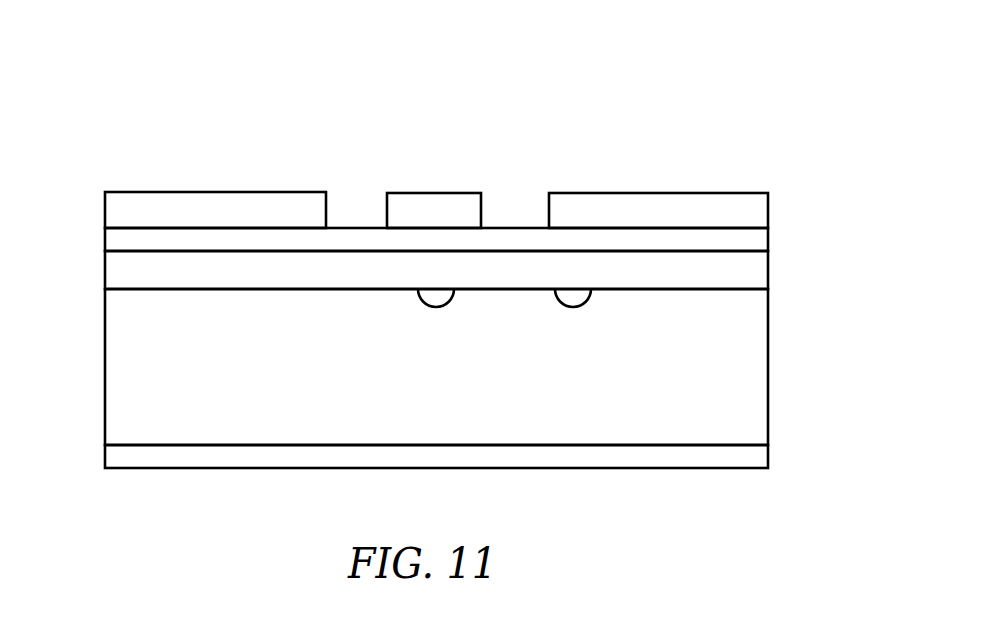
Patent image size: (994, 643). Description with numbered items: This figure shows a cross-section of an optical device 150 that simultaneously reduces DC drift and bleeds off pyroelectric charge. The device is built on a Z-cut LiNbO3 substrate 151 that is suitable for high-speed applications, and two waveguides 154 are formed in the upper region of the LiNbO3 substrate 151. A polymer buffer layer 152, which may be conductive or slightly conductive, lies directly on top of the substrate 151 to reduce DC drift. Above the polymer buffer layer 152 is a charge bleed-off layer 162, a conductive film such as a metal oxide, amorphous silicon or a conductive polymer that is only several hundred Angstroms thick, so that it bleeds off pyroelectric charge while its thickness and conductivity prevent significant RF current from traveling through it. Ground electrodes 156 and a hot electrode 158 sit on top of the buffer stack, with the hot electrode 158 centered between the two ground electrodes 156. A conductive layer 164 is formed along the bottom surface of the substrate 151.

The optical device 150 is at (480, 95).
The LiNbO3 substrate 151 is at (125, 342).
The polymer buffer layer 152 is at (768, 268).
The waveguides 154 is at (433, 313).
The ground electrodes 156 is at (211, 191).
The hot electrode 158 is at (424, 192).
The charge bleed-off layer 162 is at (768, 243).
The conductive layer 164 is at (678, 470).